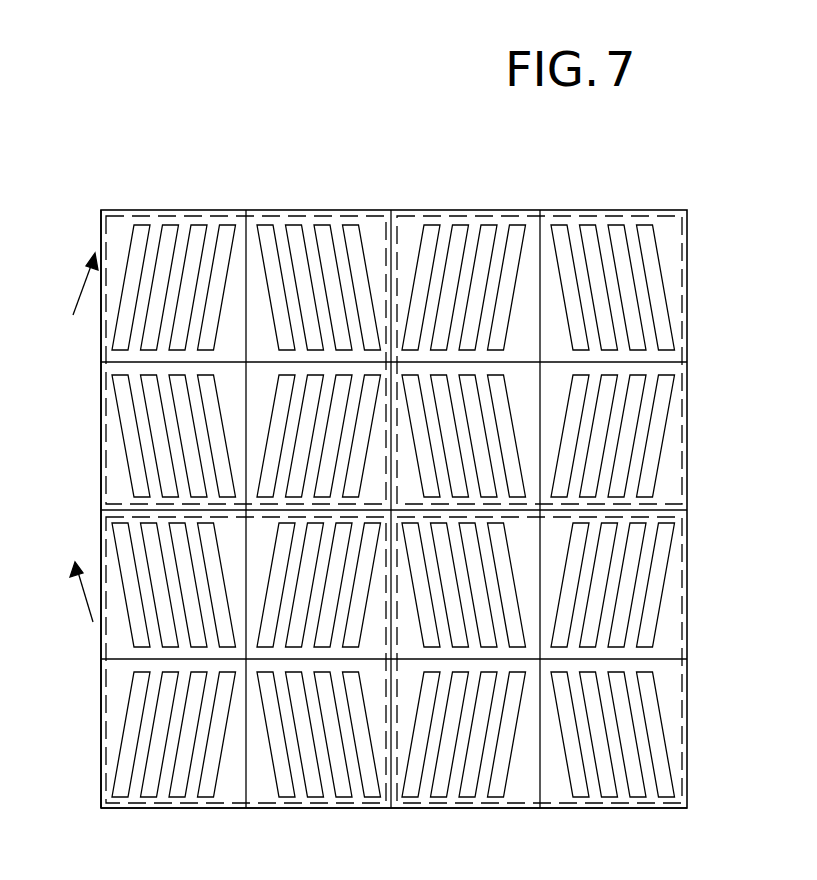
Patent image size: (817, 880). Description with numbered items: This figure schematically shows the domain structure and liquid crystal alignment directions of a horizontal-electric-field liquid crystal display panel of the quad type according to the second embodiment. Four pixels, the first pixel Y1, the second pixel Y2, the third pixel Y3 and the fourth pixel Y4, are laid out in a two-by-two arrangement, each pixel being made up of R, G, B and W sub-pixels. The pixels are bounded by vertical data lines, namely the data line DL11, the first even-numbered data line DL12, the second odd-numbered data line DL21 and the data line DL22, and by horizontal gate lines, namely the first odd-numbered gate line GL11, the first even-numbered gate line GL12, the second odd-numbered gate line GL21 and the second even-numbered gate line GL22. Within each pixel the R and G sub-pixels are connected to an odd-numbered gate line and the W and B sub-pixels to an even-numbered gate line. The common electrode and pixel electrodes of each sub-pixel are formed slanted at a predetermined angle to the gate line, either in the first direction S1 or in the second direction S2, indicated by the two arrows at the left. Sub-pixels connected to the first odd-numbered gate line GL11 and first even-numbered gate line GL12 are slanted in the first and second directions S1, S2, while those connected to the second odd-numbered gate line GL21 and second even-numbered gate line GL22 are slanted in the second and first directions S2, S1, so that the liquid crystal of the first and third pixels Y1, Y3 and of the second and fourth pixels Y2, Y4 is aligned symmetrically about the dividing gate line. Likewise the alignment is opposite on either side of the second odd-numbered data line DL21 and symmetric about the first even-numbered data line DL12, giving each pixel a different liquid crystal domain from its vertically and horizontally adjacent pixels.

The first data line of first pixel group DL11 is at (101, 226).
The first even-numbered data line DL12 is at (247, 224).
The second odd-numbered data line DL21 is at (391, 225).
The second data line of second pixel group DL22 is at (539, 227).
The first odd-numbered gate line GL11 is at (672, 363).
The first even-numbered gate line GL12 is at (672, 511).
The second odd-numbered gate line GL21 is at (668, 660).
The second even-numbered gate line GL22 is at (668, 809).
The first pixel Y1 is at (102, 465).
The second pixel Y2 is at (680, 292).
The third pixel Y3 is at (102, 754).
The fourth pixel Y4 is at (680, 588).
The first direction S1 is at (72, 284).
The second direction S2 is at (70, 592).